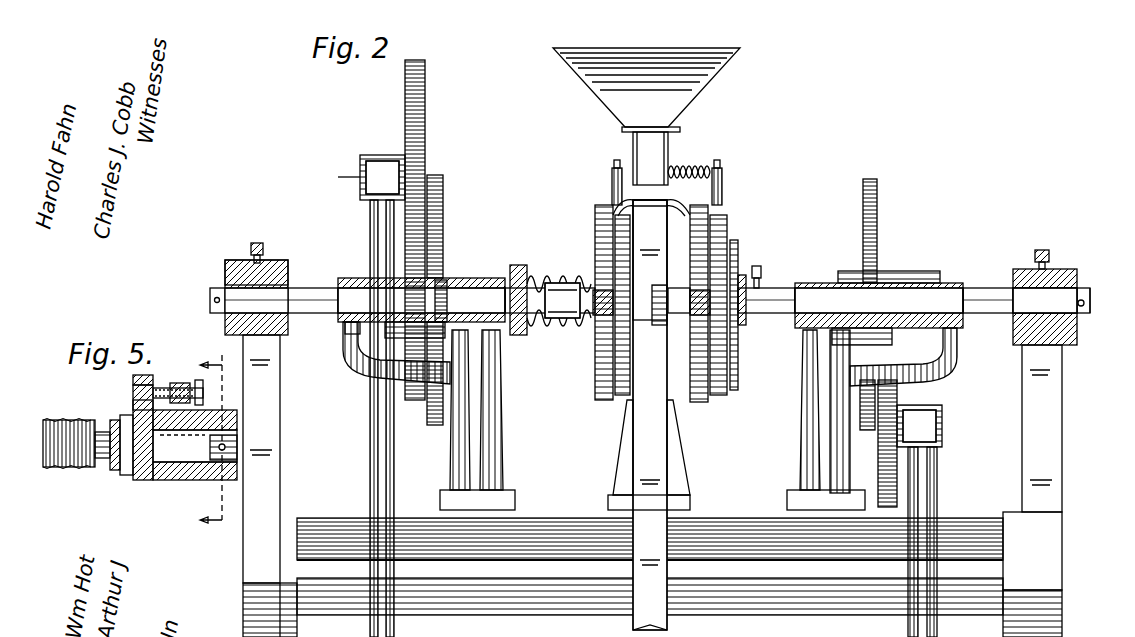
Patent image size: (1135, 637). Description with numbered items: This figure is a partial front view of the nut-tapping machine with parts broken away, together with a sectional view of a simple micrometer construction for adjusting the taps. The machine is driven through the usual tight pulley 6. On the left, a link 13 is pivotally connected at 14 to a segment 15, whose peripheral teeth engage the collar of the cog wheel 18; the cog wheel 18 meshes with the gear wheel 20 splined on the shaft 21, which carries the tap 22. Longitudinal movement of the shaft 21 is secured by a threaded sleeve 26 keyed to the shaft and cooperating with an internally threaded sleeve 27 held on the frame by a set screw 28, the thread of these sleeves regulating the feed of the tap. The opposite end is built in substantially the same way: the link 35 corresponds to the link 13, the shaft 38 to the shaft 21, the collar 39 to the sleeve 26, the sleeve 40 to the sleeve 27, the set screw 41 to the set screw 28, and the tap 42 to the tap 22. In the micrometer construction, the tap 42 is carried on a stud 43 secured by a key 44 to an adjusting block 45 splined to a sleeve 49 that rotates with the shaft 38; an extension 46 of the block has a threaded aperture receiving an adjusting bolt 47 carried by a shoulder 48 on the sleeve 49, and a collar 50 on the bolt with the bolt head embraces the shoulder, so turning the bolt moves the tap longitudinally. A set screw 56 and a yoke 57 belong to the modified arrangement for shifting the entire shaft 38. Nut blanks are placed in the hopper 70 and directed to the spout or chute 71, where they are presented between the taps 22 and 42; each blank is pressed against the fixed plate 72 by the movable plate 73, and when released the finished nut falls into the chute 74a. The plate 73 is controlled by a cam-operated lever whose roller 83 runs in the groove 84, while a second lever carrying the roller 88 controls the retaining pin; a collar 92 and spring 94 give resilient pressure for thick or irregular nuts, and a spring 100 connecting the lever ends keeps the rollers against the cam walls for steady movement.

In FIG. 2, the tight pulley 6 is at (214, 438).
In FIG. 2, the link 13 is at (394, 468).
In FIG. 2, the pivotal connection 14 is at (360, 177).
In FIG. 2, the segment 15 is at (425, 108).
In FIG. 2, the cog wheel 18 is at (443, 220).
In FIG. 2, the gear wheel 20 is at (441, 280).
In FIG. 2, the shaft 21 is at (210, 298).
In FIG. 2, the tap 22 is at (583, 320).
In FIG. 2, the threaded sleeve 26 is at (228, 288).
In FIG. 2, the internally threaded sleeve 27 is at (288, 275).
In FIG. 2, the set screw 28 is at (263, 248).
In FIG. 2, the link 35 is at (940, 484).
In FIG. 2, the shaft 38 is at (975, 294).
In FIG. 5, the shaft 38 is at (224, 435).
In FIG. 2, the collar 39 is at (1085, 300).
In FIG. 2, the sleeve 40 is at (1077, 284).
In FIG. 2, the set screw 41 is at (1043, 250).
In FIG. 2, the tap 42 is at (718, 298).
In FIG. 5, the tap 42 is at (68, 467).
In FIG. 2, the stud 43 is at (742, 322).
In FIG. 5, the stud 43 is at (101, 458).
In FIG. 5, the key 44 is at (124, 475).
In FIG. 5, the adjusting block 45 is at (148, 480).
In FIG. 5, the extension 46 is at (148, 375).
In FIG. 5, the adjusting bolt 47 is at (165, 388).
In FIG. 5, the shoulder 48 is at (190, 400).
In FIG. 5, the sleeve 49 is at (196, 480).
In FIG. 5, the collar 50 is at (133, 404).
In FIG. 2, the set screw 56 is at (878, 455).
In FIG. 2, the yoke 57 is at (877, 230).
In FIG. 2, the hopper 70 is at (710, 82).
In FIG. 2, the spout or chute 71 is at (662, 146).
In FIG. 2, the fixed plate 72 is at (632, 280).
In FIG. 2, the plate 73 is at (667, 325).
In FIG. 2, the chute 74a is at (668, 462).
In FIG. 2, the roller 83 is at (595, 210).
In FIG. 2, the groove 84 is at (700, 290).
In FIG. 2, the roller 88 is at (738, 214).
In FIG. 2, the collar 92 is at (519, 265).
In FIG. 2, the spring 94 is at (556, 270).
In FIG. 2, the spring 100 is at (712, 165).